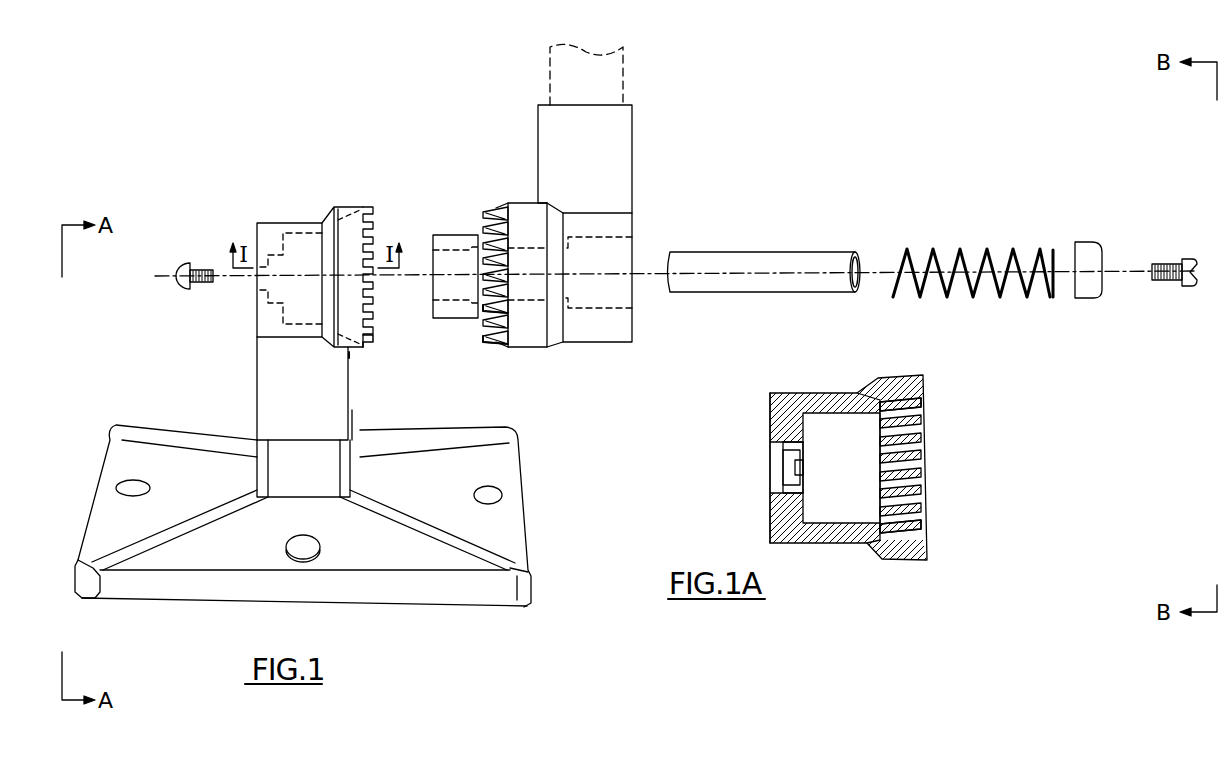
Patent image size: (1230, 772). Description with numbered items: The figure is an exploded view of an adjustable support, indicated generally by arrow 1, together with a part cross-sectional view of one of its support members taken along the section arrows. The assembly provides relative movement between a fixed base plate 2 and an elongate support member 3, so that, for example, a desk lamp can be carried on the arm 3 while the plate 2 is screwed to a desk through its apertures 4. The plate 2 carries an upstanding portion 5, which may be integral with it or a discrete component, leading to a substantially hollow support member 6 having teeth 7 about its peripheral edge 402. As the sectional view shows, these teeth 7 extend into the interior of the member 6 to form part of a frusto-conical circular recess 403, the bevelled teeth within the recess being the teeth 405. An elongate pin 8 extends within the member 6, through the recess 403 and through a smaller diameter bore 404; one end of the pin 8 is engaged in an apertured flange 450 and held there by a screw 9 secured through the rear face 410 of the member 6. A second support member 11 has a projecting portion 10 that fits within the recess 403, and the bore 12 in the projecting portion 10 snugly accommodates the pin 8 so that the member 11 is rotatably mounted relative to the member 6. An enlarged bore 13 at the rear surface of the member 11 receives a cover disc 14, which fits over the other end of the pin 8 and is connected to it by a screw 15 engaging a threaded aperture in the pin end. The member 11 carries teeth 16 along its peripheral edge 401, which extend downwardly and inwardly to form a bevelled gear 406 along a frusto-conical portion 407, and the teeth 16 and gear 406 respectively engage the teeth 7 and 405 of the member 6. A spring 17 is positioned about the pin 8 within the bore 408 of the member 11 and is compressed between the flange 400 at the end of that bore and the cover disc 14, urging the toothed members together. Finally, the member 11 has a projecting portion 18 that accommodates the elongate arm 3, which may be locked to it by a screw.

In FIG. 1, the adjustable support 1 is at (628, 368).
In FIG. 1, the base plate 2 is at (500, 494).
In FIG. 1, the elongate support member 3 is at (613, 90).
In FIG. 1, the apertures 4 is at (308, 554).
In FIG. 1, the upstanding portion 5 is at (338, 408).
In FIG. 1, the support member 6 is at (351, 223).
In FIG. 1A, the support member 6 is at (842, 391).
In FIG. 1, the teeth 7 is at (373, 229).
In FIG. 1, the elongate pin 8 is at (768, 253).
In FIG. 1, the screw 9 is at (207, 270).
In FIG. 1, the projecting portion 10 is at (462, 242).
In FIG. 1, the second support member 11 is at (578, 333).
In FIG. 1, the bore 12 is at (436, 300).
In FIG. 1, the enlarged bore 13 is at (628, 258).
In FIG. 1, the cover disc 14 is at (1090, 248).
In FIG. 1, the screw 15 is at (1170, 262).
In FIG. 1, the teeth 16 is at (500, 341).
In FIG. 1, the spring 17 is at (940, 252).
In FIG. 1, the projecting portion 18 is at (613, 150).
In FIG. 1, the flange 400 is at (488, 282).
In FIG. 1, the peripheral edge 401 is at (505, 347).
In FIG. 1, the peripheral edge 402 is at (372, 346).
In FIG. 1A, the peripheral edge 402 is at (922, 510).
In FIG. 1A, the frusto-conical circular recess 403 is at (907, 457).
In FIG. 1, the bore 404 is at (292, 257).
In FIG. 1A, the bore 404 is at (847, 503).
In FIG. 1A, the bevelled teeth 405 is at (921, 413).
In FIG. 1, the bevelled gear 406 is at (481, 312).
In FIG. 1, the frusto-conical portion 407 is at (484, 236).
In FIG. 1, the bore 408 is at (533, 290).
In FIG. 1, the rear face 410 is at (256, 242).
In FIG. 1A, the rear face 410 is at (770, 423).
In FIG. 1A, the apertured flange 450 is at (785, 470).